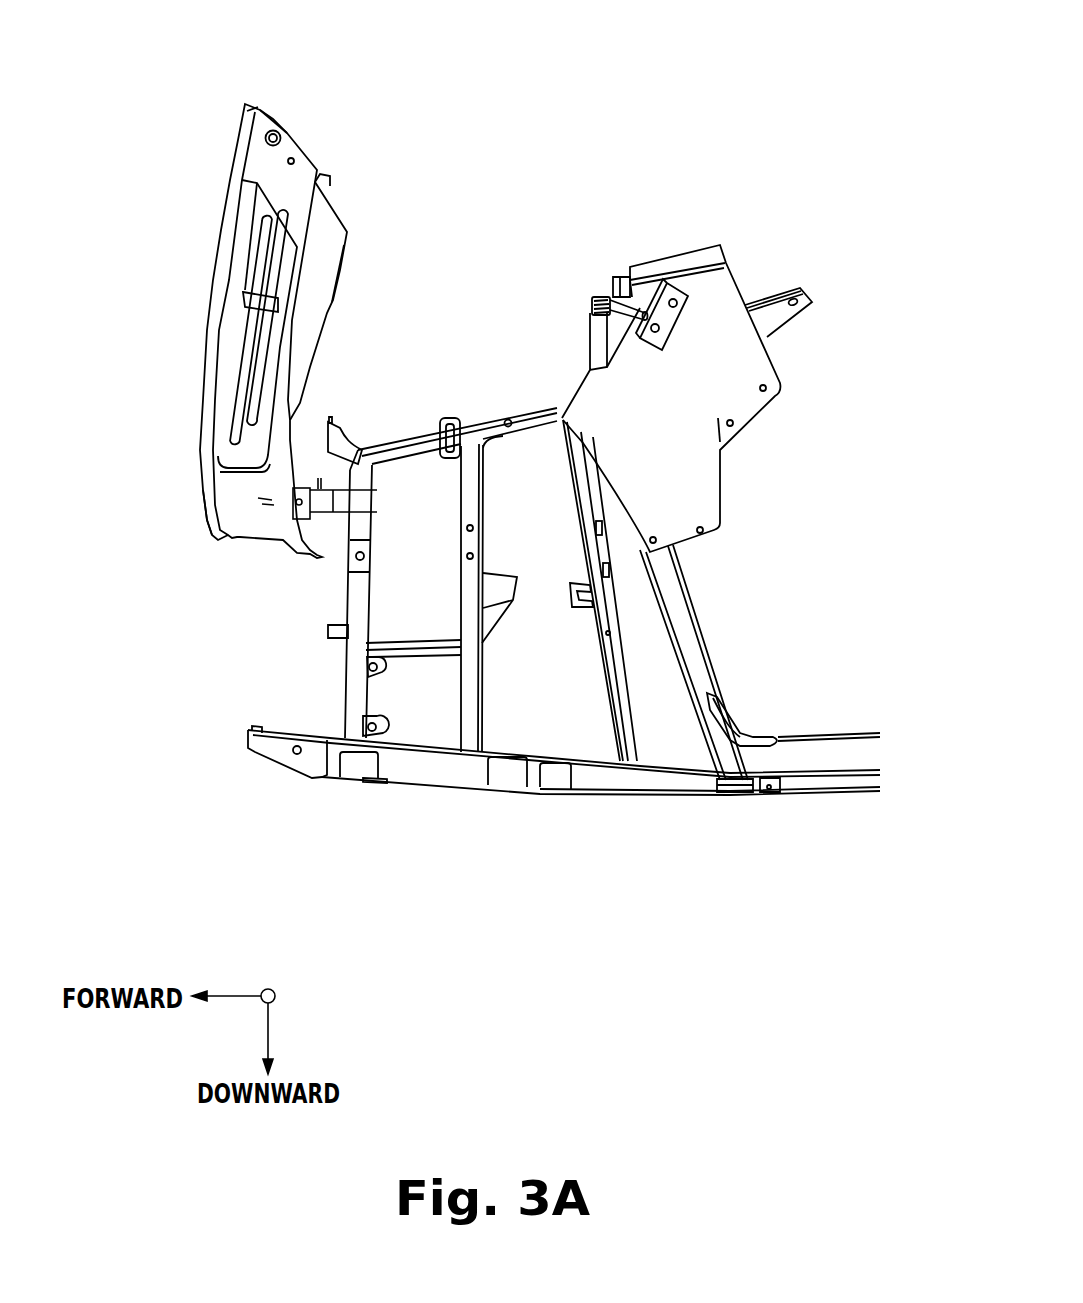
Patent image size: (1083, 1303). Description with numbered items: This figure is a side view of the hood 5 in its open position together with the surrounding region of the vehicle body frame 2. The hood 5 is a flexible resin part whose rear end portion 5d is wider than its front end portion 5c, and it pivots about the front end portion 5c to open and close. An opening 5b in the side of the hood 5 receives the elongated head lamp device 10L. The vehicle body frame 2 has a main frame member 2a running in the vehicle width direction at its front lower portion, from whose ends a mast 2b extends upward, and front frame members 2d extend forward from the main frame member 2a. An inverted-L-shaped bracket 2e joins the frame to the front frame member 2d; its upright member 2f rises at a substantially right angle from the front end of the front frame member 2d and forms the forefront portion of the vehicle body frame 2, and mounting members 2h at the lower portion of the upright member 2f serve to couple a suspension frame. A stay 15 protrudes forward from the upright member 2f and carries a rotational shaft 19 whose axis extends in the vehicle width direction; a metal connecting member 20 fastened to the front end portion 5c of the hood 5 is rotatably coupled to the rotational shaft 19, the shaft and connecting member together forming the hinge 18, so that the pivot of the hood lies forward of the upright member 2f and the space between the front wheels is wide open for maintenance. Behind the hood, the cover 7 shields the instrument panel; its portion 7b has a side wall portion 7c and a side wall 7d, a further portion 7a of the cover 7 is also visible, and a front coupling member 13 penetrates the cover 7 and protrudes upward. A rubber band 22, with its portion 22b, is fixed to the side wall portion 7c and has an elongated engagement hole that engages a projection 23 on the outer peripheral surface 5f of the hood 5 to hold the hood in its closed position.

The vehicle body frame 2 is at (558, 606).
The main frame member 2a is at (717, 793).
The mast 2b is at (693, 617).
The front frame member 2d is at (431, 787).
The bracket 2e is at (388, 452).
The upright member 2f is at (348, 602).
The mounting member 2h is at (362, 722).
The hood 5 is at (230, 279).
The opening 5b is at (258, 183).
The front end portion 5c is at (200, 500).
The rear end portion 5d is at (247, 110).
The outer peripheral surface 5f is at (288, 143).
The cover 7 is at (673, 337).
The upper flange of cover bracket 7a is at (673, 253).
The front portion of the cover 7b is at (620, 277).
The side wall portion 7c is at (683, 278).
The side wall 7d is at (598, 353).
The head lamp device 10L is at (238, 352).
The front coupling member 13 is at (700, 342).
The stay 15 is at (347, 480).
The hinge 18 is at (214, 546).
The rotational shaft 19 is at (295, 503).
The connecting member 20 is at (295, 478).
The rubber band 22 is at (590, 297).
The bolt head 22b is at (590, 315).
The projection 23 is at (275, 130).